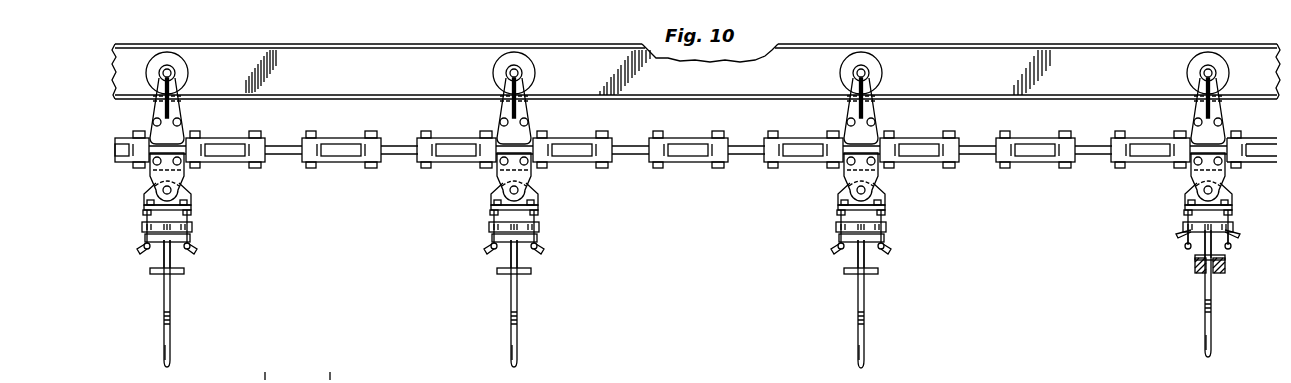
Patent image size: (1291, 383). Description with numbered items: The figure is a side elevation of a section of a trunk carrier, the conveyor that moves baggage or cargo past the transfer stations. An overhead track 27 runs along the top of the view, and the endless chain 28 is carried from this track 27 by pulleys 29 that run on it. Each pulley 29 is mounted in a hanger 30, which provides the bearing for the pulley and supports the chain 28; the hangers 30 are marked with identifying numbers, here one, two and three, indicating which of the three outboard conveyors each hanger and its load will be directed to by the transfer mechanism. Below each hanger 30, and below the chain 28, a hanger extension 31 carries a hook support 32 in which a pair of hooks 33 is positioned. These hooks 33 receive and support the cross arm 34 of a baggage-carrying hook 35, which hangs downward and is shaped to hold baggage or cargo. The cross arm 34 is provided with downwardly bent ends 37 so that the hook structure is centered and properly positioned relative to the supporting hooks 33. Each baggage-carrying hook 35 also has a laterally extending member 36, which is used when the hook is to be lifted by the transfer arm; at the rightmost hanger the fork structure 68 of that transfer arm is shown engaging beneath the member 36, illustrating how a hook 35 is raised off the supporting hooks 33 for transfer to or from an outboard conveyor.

The track 27 is at (310, 58).
The chain 28 is at (349, 163).
The pulley 29 is at (705, 73).
The hanger 30 is at (711, 111).
The hanger extension 31 is at (713, 177).
The hook support 32 is at (709, 197).
The hook 33 is at (693, 223).
The cross arm 34 is at (687, 254).
The baggage-carrying hook 35 is at (687, 299).
The laterally extending member 36 is at (696, 267).
The downwardly bent end 37 is at (692, 243).
The fork structure 68 is at (1239, 277).